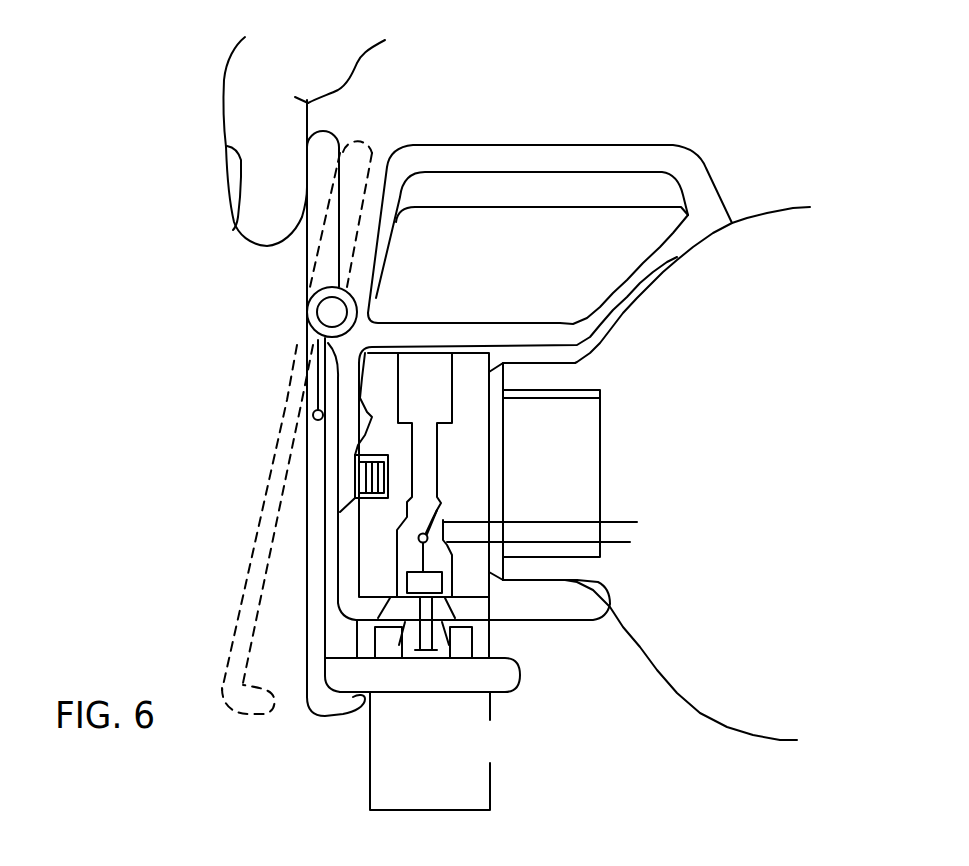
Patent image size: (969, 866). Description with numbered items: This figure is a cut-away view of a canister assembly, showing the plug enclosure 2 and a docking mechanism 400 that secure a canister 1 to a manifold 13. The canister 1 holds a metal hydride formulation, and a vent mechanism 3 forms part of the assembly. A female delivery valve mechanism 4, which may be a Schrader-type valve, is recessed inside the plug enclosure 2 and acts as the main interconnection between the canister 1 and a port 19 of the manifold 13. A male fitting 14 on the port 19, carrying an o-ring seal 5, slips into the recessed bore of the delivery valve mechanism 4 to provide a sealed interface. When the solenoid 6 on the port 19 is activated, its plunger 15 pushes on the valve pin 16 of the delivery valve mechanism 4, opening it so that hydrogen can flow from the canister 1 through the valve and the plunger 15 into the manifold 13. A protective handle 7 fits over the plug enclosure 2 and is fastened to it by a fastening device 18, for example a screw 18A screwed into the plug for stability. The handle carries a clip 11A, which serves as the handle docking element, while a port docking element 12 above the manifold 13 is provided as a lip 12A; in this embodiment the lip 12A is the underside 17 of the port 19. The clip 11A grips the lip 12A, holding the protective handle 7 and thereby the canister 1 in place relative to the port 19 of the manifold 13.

The canister 1 is at (780, 688).
The plug enclosure 2 is at (473, 407).
The vent mechanism 3 is at (422, 373).
The delivery valve mechanism 4 is at (443, 510).
The o-ring seal 5 is at (430, 607).
The solenoid 6 is at (460, 647).
The protective handle 7 is at (707, 187).
The clip 11A is at (312, 703).
The port docking element 12 is at (343, 677).
The lip 12A is at (530, 655).
The manifold 13 is at (587, 655).
The male fitting 14 is at (385, 645).
The plunger 15 is at (383, 580).
The valve pin 16 is at (443, 558).
The underside 17 is at (433, 686).
The fastening device 18 is at (313, 485).
The screw 18A is at (353, 457).
The port 19 is at (473, 747).
The docking mechanism 400 is at (338, 820).